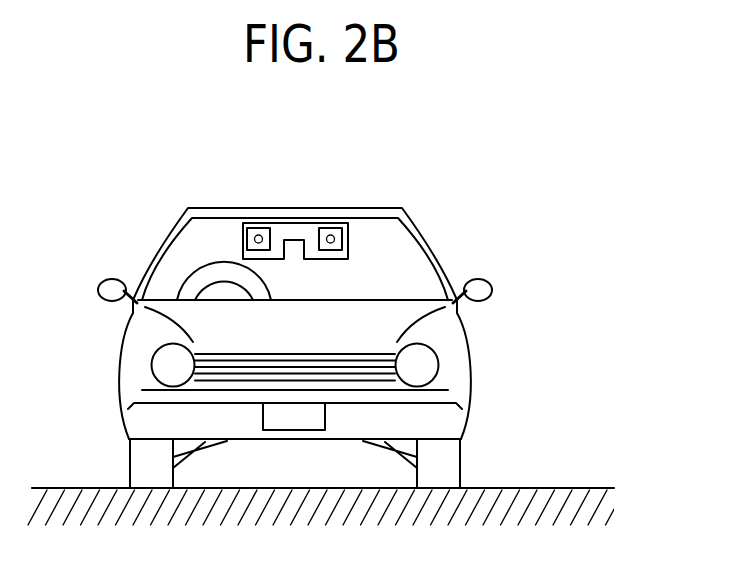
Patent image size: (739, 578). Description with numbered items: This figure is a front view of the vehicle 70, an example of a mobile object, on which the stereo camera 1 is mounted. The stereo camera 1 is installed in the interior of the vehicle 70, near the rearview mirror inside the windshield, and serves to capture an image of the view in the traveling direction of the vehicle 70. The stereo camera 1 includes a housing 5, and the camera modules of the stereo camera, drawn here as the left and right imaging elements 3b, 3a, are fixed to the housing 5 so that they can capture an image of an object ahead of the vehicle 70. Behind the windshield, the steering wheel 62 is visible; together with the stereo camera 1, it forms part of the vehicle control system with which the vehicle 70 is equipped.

The stereo camera 1 is at (308, 220).
The first camera 3a is at (349, 237).
The second camera 3b is at (244, 237).
The housing 5 is at (348, 247).
The steering wheel 62 is at (196, 279).
The vehicle 70 is at (403, 208).